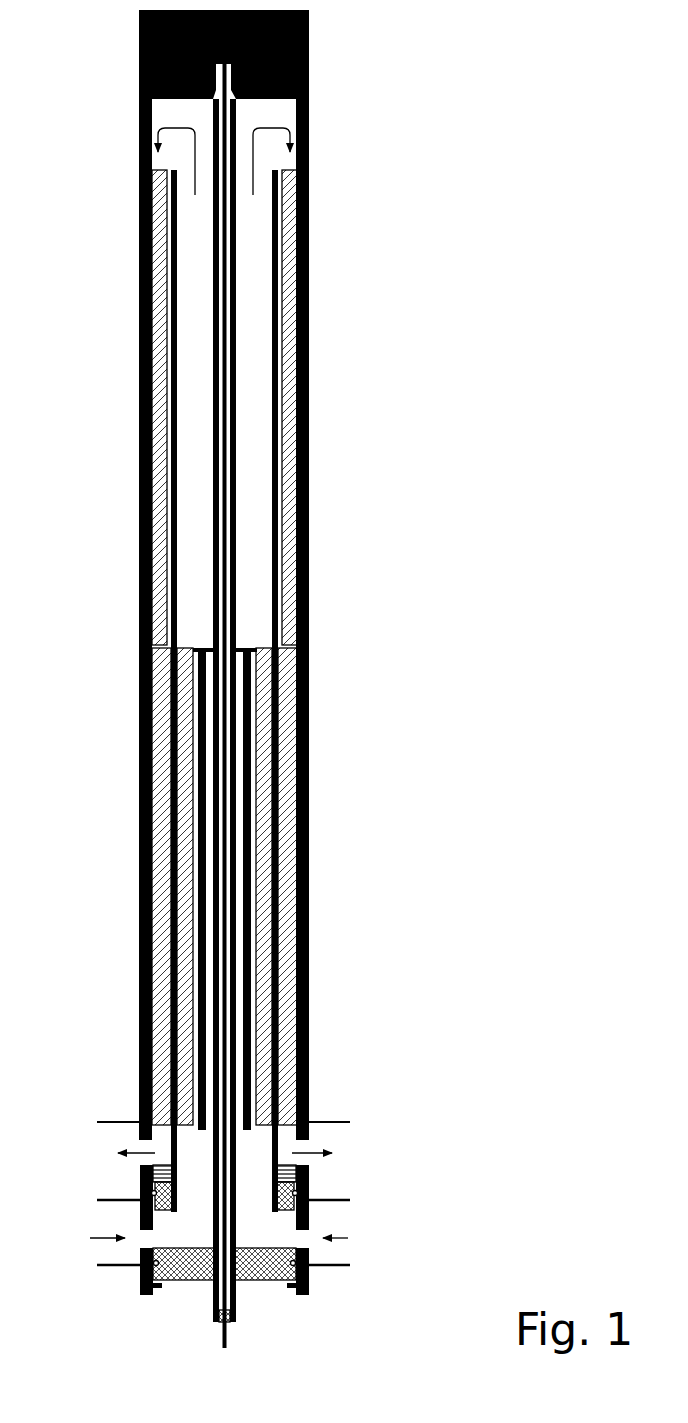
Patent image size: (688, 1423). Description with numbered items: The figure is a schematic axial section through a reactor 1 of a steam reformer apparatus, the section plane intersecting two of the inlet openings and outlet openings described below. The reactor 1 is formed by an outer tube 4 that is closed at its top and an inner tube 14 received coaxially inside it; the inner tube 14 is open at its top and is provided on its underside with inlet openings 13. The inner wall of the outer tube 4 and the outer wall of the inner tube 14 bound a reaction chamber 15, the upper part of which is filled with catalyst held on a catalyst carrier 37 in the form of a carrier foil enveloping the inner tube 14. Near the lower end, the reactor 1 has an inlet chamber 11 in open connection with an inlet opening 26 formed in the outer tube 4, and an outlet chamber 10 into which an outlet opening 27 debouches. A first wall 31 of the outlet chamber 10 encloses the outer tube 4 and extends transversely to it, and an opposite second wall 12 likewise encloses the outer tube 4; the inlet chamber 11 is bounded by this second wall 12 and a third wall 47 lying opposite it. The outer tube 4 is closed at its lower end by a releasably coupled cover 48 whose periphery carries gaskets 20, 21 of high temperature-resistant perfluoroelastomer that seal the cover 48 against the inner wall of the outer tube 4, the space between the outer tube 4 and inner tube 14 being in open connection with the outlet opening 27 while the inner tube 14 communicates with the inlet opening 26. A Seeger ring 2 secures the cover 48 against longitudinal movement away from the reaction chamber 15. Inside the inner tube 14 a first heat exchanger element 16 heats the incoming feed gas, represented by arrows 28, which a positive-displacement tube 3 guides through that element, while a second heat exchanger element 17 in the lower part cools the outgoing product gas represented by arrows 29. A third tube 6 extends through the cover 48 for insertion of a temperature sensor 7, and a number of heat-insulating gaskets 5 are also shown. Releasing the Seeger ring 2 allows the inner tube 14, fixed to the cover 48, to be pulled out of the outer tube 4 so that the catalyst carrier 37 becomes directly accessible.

The reactor 1 is at (108, 1312).
The Seeger ring 2 is at (290, 1282).
The positive-displacement tube 3 is at (200, 1050).
The outer tube 4 is at (309, 362).
The heat-insulating gaskets 5 is at (140, 1165).
The third tube 6 is at (236, 1300).
The temperature sensor 7 is at (236, 421).
The outlet chamber 10 is at (316, 1190).
The inlet chamber 11 is at (320, 1260).
The second wall 12 is at (348, 1200).
The inlet openings 13 is at (300, 1246).
The inner tube 14 is at (280, 485).
The reaction chamber 15 is at (285, 647).
The first heat exchanger element 16 is at (285, 990).
The second heat exchanger element 17 is at (309, 917).
The gasket 20 is at (140, 1257).
The gasket 21 is at (140, 1190).
The inlet opening 26 is at (312, 1230).
The outlet opening 27 is at (310, 1164).
The arrows (incoming feed gas) 28 is at (165, 128).
The arrows (outgoing product gas) 29 is at (225, 1143).
The first wall 31 is at (332, 1121).
The catalyst carrier 37 is at (296, 170).
The third wall 47 is at (333, 1268).
The cover 48 is at (186, 1282).